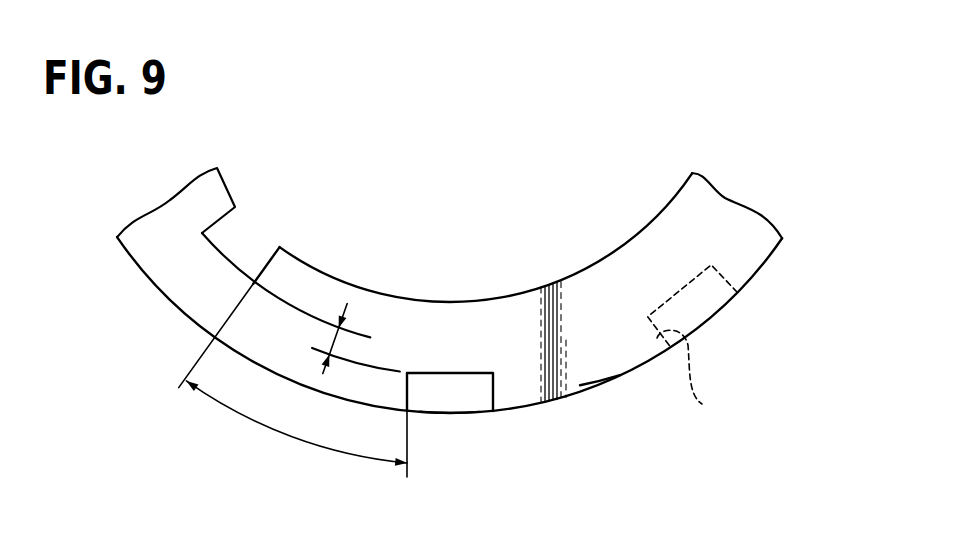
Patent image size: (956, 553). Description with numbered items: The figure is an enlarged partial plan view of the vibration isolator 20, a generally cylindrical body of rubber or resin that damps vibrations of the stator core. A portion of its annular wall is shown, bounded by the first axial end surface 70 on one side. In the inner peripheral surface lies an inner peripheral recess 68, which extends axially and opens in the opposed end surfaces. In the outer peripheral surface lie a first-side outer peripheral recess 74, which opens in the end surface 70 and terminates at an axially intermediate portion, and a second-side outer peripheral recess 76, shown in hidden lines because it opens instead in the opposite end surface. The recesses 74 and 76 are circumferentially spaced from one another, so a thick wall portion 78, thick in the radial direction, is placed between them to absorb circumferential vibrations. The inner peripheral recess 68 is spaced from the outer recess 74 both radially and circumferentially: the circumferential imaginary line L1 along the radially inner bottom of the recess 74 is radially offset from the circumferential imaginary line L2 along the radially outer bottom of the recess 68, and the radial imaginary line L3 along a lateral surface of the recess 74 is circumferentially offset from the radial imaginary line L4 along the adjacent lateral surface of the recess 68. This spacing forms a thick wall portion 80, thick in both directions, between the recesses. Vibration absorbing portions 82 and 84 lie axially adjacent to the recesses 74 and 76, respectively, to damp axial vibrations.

The vibration isolator 20 is at (462, 140).
The inner peripheral recess 68 is at (268, 257).
The first axial end surface 70 is at (637, 247).
The first-side outer peripheral recess 74 is at (493, 390).
The second-side outer peripheral recess 76 is at (686, 381).
The thick wall portion 78 is at (593, 365).
The thick wall portion 80 is at (285, 360).
The vibration absorbing portion 82 is at (456, 415).
The vibration absorbing portion 84 is at (713, 320).
The circumferential imaginary line L1 is at (387, 368).
The circumferential imaginary line L2 is at (306, 310).
The radial imaginary line L3 is at (410, 442).
The radial imaginary line L4 is at (200, 362).